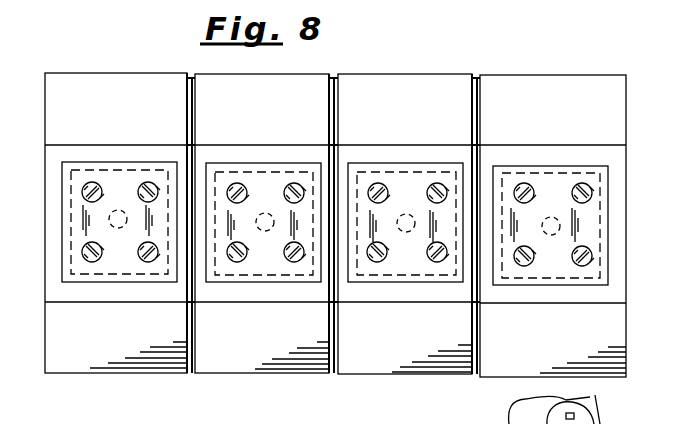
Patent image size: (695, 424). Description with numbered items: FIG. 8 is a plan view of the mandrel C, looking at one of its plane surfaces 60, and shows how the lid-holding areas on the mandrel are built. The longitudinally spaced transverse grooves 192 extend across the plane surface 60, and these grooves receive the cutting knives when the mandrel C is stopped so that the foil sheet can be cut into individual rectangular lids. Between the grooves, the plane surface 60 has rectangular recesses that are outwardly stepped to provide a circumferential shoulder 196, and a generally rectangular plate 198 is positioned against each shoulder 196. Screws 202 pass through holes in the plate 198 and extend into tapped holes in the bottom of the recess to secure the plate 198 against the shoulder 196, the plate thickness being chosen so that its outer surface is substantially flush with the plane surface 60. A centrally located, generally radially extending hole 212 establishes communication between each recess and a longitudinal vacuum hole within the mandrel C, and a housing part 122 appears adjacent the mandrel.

The plane surface 60 is at (115, 73).
The transverse groove 192 is at (477, 75).
The circumferential shoulder 196 is at (97, 283).
The rectangular plate 198 is at (112, 178).
The screw 202 is at (148, 182).
The radially extending hole 212 is at (120, 228).
The mandrel C is at (556, 68).
The housing part 122 is at (596, 403).